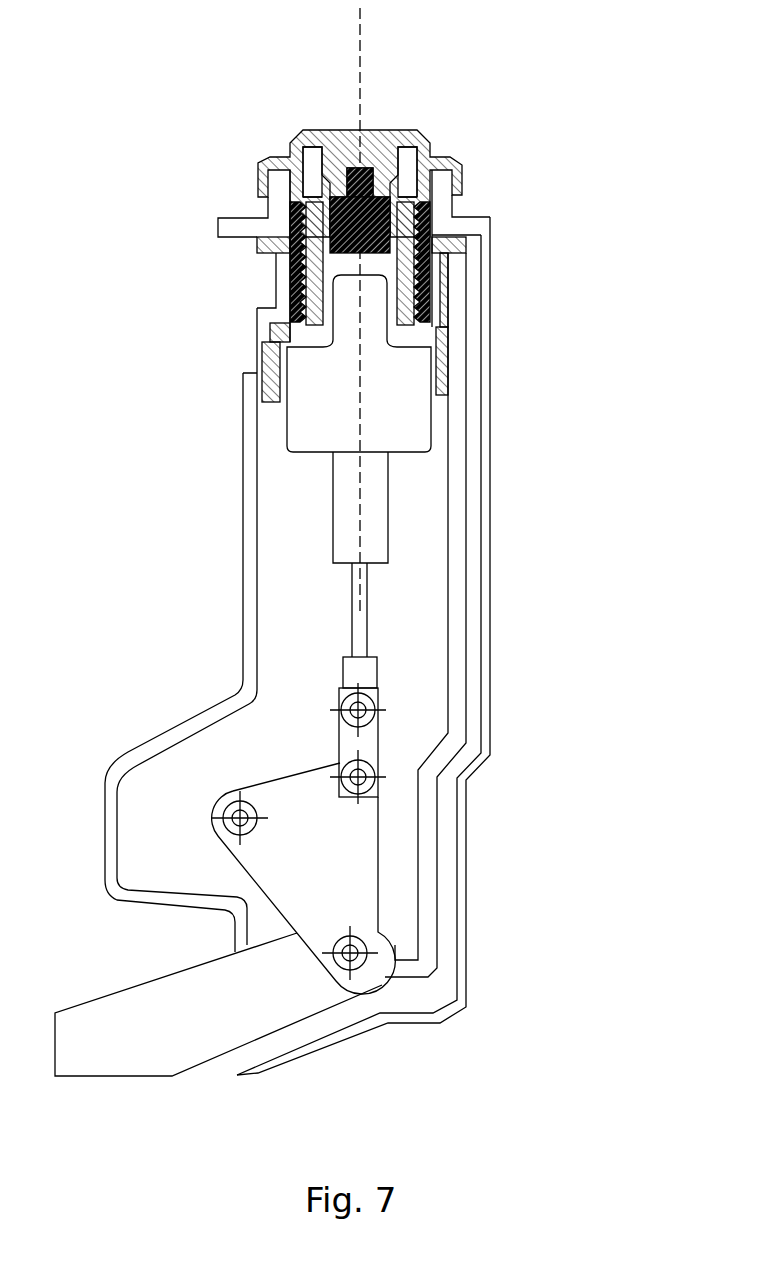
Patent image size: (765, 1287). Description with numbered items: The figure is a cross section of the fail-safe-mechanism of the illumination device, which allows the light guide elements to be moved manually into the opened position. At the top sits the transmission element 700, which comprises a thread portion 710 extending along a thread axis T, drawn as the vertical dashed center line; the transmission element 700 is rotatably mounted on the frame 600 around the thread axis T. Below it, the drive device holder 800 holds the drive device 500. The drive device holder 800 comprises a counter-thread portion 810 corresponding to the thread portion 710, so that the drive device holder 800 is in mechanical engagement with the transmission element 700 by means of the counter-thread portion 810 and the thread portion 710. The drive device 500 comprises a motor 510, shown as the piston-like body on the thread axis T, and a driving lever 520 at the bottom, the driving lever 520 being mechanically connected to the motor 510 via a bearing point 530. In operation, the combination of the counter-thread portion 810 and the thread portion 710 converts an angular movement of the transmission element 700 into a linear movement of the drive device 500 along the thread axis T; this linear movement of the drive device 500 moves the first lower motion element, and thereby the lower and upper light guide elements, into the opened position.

The thread axis T is at (374, 102).
The drive device 500 is at (216, 300).
The transmission element 700 is at (440, 212).
The thread portion 710 is at (438, 296).
The counter-thread portion 810 is at (318, 271).
The drive device holder 800 is at (455, 373).
The motor 510 is at (400, 414).
The frame 600 is at (448, 744).
The bearing point 530 is at (366, 943).
The driving lever 520 is at (191, 1020).